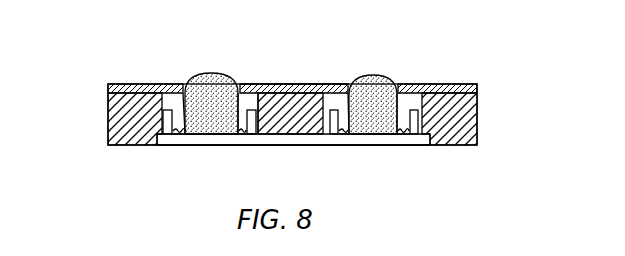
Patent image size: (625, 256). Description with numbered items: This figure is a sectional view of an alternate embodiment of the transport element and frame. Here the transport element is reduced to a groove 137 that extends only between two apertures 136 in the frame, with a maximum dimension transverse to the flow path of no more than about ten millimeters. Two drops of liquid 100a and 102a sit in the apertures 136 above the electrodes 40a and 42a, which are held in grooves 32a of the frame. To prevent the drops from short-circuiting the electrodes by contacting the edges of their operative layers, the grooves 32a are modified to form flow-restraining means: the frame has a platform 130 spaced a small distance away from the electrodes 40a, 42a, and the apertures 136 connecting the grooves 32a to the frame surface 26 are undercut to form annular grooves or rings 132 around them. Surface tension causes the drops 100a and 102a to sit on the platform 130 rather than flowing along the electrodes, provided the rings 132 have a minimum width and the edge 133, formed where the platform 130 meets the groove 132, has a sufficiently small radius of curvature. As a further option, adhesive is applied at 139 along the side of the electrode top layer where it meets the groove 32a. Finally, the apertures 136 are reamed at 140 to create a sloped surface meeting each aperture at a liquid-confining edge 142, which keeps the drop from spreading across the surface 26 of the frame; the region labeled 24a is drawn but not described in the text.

The surface 26 is at (458, 88).
The apertures 136 is at (108, 97).
The groove 137 is at (293, 85).
The platform 130 is at (350, 146).
The drop 100a is at (201, 75).
The drop 102a is at (376, 76).
The reamed portion 140 is at (237, 86).
The annular grooves or rings 132 is at (163, 133).
The adhesive 139 is at (175, 128).
The edge 133 is at (250, 134).
The electrode 40a is at (174, 152).
The electrode 42a is at (400, 152).
The central region 24a is at (307, 152).
The grooves 32a is at (258, 149).
The liquid-confining edge 142 is at (260, 120).